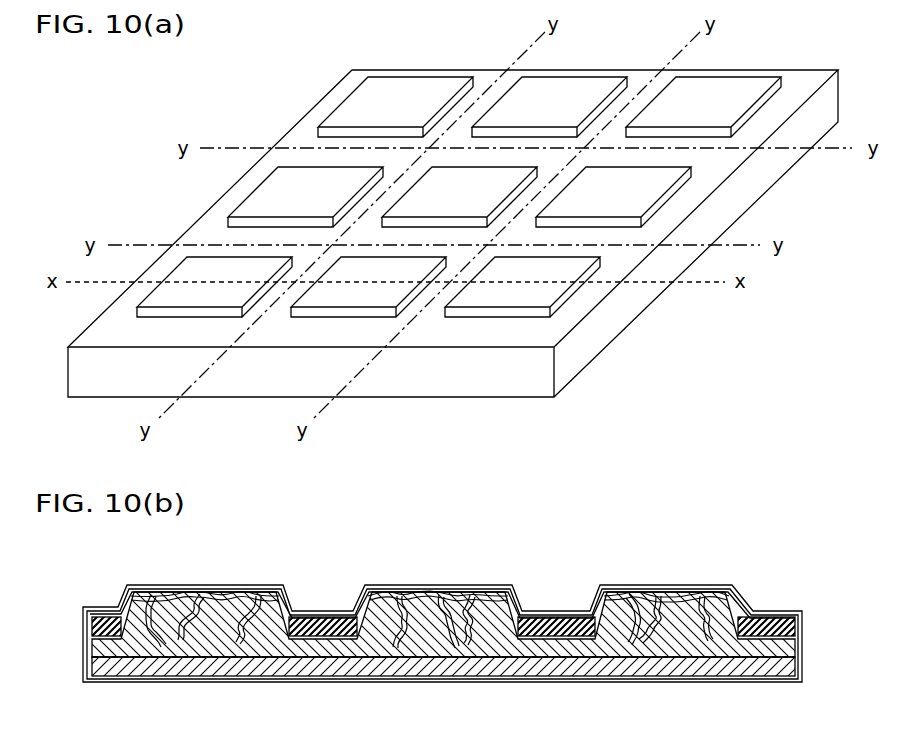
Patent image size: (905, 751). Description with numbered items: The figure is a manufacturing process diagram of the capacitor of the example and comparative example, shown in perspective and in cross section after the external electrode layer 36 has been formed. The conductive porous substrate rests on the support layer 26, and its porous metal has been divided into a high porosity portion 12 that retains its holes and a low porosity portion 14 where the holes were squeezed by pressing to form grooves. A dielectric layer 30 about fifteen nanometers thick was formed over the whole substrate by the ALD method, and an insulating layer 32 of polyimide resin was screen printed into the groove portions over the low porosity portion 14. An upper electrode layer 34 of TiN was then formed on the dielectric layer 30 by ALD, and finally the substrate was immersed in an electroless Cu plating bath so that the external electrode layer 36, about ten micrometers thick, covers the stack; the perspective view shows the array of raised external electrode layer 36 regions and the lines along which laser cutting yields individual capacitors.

In FIG. 10B, the high porosity portion 12 is at (432, 645).
In FIG. 10B, the low porosity portion 14 is at (312, 615).
In FIG. 10B, the support layer 26 is at (372, 660).
In FIG. 10B, the dielectric layer 30 is at (735, 590).
In FIG. 10B, the insulating layer 32 is at (548, 614).
In FIG. 10B, the upper electrode layer 34 is at (650, 591).
In FIG. 10A, the external electrode layer 36 is at (720, 163).
In FIG. 10B, the external electrode layer 36 is at (433, 588).